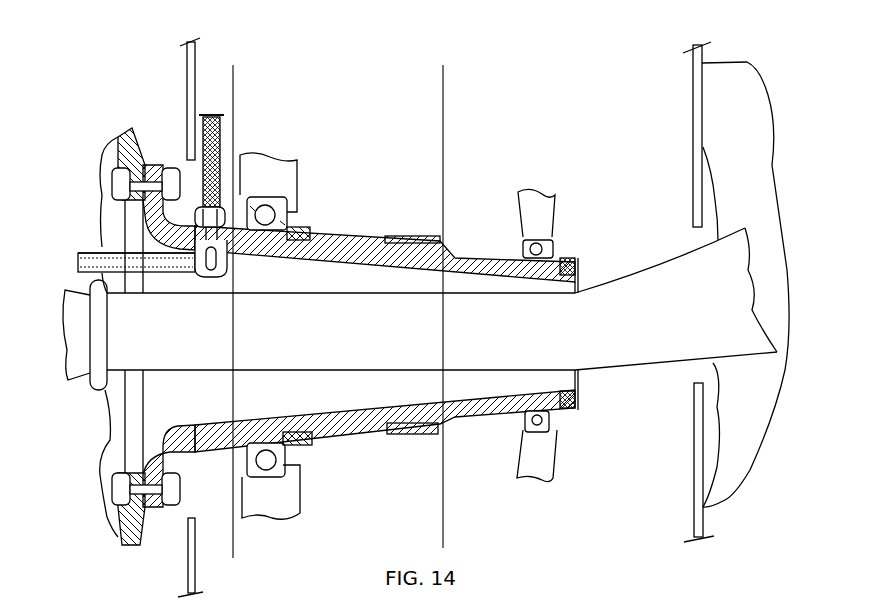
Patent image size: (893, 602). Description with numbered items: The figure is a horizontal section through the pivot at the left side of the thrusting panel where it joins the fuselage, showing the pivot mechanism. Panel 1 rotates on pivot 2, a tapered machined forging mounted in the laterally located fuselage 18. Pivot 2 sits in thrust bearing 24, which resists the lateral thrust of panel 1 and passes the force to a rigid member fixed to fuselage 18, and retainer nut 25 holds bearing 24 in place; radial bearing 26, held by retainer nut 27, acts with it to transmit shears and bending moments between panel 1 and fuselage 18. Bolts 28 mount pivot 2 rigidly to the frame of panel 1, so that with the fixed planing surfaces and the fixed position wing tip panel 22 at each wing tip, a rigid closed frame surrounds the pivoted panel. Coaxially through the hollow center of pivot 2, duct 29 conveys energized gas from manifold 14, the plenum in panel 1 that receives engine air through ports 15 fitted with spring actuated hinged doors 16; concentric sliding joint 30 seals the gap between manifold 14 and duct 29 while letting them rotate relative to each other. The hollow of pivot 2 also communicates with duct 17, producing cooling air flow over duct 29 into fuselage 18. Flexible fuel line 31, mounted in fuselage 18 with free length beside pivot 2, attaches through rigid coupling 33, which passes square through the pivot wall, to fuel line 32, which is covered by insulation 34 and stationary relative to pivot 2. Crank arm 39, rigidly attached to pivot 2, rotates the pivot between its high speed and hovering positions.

The panel 1 is at (123, 143).
The pivot 2 is at (146, 510).
The manifold 14 is at (80, 364).
The ports 15 is at (212, 85).
The hinged doors 16 is at (406, 83).
The ducts 17 is at (95, 413).
The fuselage 18 is at (188, 74).
The wing tip panel 22 is at (748, 100).
The thrust bearing 24 is at (290, 216).
The retainer nut 25 is at (312, 237).
The radial bearing 26 is at (556, 245).
The retainer nut 27 is at (576, 259).
The bolts 28 is at (112, 492).
The duct 29 is at (647, 346).
The concentric sliding joint 30 is at (98, 333).
The flexible fuel line 31 is at (222, 140).
The fuel line 32 is at (84, 252).
The rigid coupling 33 is at (214, 234).
The insulation 34 is at (96, 257).
The crank arm 39 is at (397, 239).